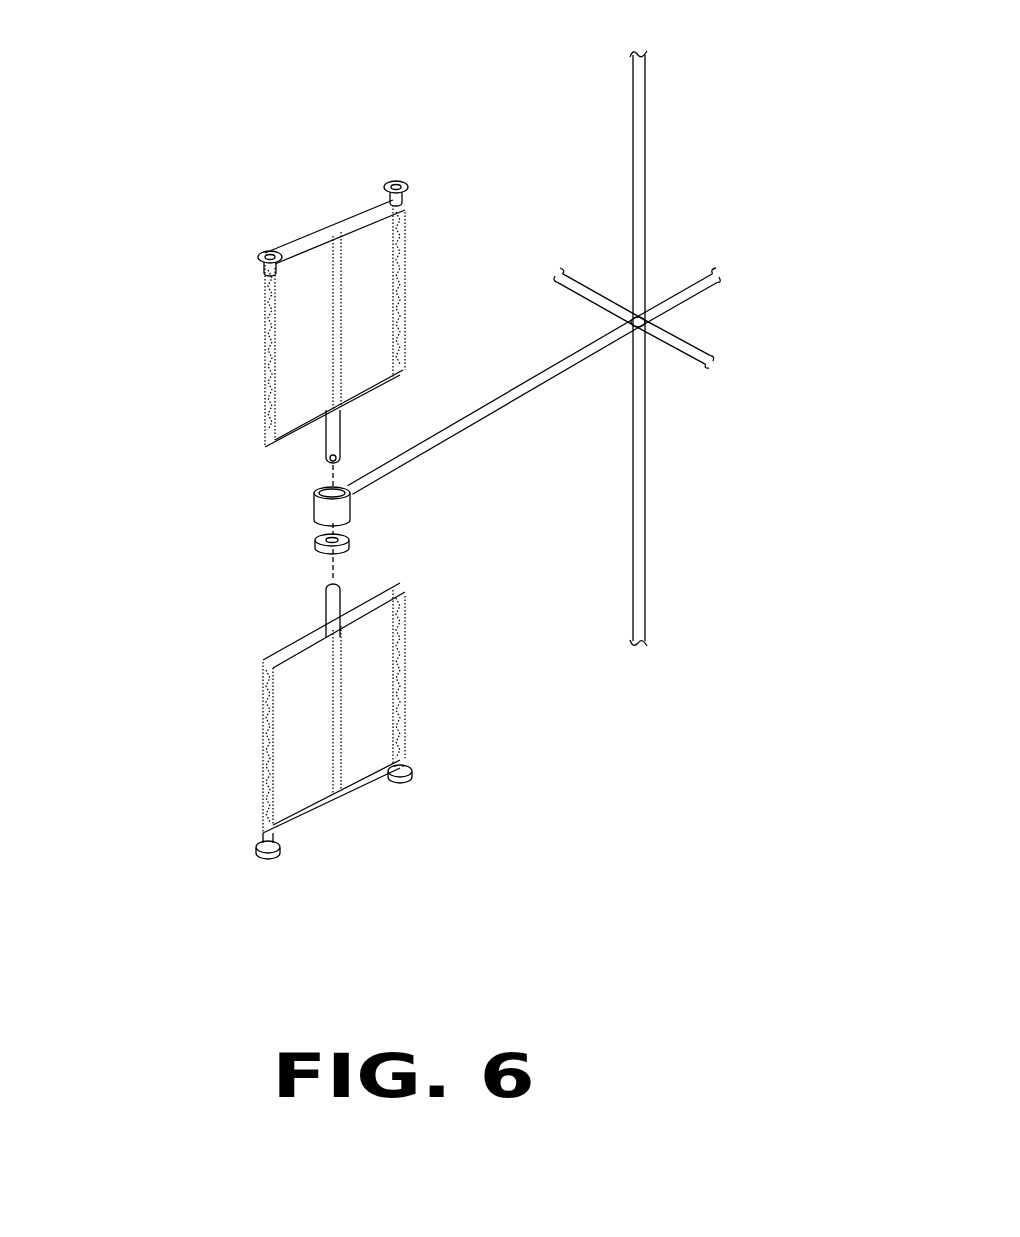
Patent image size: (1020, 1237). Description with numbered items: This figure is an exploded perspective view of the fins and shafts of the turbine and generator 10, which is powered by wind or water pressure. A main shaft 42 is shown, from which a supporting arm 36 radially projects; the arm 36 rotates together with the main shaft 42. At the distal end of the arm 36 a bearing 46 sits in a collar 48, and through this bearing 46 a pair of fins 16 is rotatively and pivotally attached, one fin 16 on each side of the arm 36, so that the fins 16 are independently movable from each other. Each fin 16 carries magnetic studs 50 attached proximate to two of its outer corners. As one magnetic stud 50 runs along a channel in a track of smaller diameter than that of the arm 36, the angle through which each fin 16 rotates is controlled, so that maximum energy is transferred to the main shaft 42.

The turbine and generator 10 is at (721, 54).
The fin 16 is at (403, 232).
The supporting arm 36 is at (462, 430).
The main shaft 42 is at (640, 540).
The bearing 46 is at (320, 550).
The collar 48 is at (316, 500).
The magnetic stud 50 is at (396, 180).